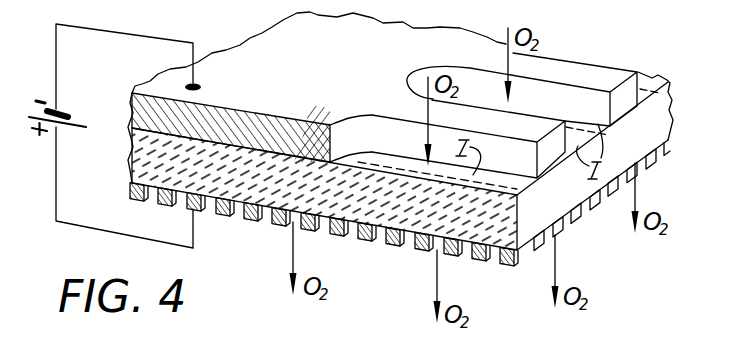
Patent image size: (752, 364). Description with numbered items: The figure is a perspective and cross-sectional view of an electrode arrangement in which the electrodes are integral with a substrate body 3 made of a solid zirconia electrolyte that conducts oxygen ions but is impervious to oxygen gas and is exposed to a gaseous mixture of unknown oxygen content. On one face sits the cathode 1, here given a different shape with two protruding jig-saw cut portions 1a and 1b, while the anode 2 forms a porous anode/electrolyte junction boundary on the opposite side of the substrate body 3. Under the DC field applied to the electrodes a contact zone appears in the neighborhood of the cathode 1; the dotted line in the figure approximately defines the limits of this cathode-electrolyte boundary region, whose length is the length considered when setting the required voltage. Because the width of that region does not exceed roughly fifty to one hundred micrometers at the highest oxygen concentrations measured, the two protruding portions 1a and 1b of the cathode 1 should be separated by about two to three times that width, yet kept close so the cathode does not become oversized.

The cathode 1 is at (252, 128).
The protruding jig-saw cut portion of the cathode 1a is at (598, 73).
The protruding jig-saw cut portion of the cathode 1b is at (526, 158).
The anode 2 is at (249, 219).
The substrate body 3 is at (293, 174).